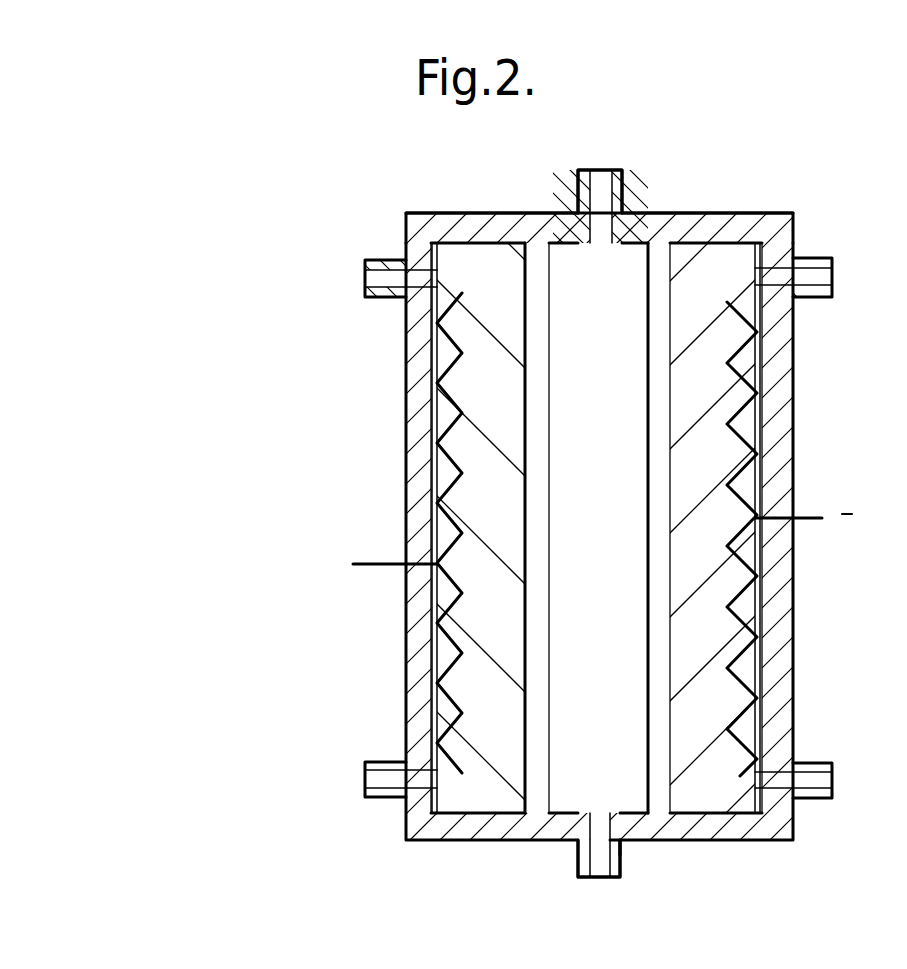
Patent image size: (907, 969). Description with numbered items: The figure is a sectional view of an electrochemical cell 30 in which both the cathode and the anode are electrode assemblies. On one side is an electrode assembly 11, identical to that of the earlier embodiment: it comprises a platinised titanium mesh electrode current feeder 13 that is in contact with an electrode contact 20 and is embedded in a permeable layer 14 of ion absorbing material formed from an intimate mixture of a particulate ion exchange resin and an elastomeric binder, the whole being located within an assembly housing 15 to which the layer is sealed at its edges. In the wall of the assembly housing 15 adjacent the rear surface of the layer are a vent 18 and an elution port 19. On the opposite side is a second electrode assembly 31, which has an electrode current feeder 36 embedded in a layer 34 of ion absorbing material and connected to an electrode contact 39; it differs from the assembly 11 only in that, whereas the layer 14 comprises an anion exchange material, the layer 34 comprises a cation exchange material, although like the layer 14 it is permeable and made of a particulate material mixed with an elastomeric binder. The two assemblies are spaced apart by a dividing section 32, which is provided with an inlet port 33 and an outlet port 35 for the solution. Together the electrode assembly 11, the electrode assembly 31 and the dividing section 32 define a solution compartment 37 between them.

The electrode assembly 11 is at (453, 500).
The electrode current feeder 13 is at (433, 480).
The permeable layer of ion absorbing material 14 is at (445, 802).
The assembly housing 15 is at (418, 690).
The vent 18 is at (385, 272).
The elution port 19 is at (378, 782).
The electrode contact 20 is at (382, 567).
The electrochemical cell 30 is at (698, 168).
The electrode assembly 31 is at (780, 212).
The dividing section 32 is at (624, 853).
The inlet port 33 is at (600, 870).
The layer of ion absorbing material 34 is at (735, 800).
The outlet port 35 is at (604, 168).
The electrode current feeder 36 is at (747, 472).
The solution compartment 37 is at (573, 792).
The electrode contact 39 is at (812, 523).